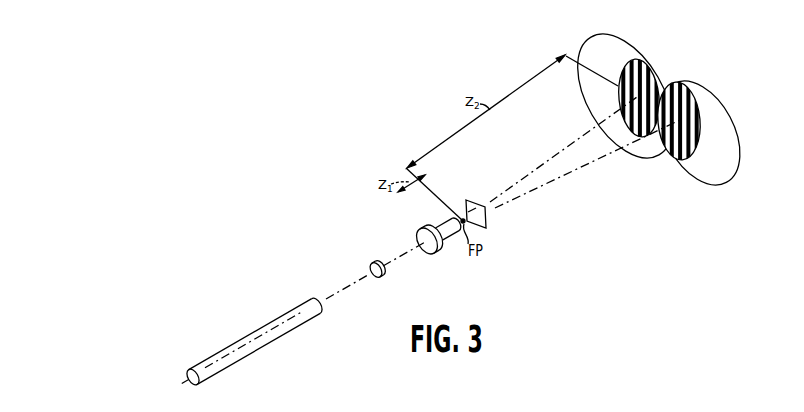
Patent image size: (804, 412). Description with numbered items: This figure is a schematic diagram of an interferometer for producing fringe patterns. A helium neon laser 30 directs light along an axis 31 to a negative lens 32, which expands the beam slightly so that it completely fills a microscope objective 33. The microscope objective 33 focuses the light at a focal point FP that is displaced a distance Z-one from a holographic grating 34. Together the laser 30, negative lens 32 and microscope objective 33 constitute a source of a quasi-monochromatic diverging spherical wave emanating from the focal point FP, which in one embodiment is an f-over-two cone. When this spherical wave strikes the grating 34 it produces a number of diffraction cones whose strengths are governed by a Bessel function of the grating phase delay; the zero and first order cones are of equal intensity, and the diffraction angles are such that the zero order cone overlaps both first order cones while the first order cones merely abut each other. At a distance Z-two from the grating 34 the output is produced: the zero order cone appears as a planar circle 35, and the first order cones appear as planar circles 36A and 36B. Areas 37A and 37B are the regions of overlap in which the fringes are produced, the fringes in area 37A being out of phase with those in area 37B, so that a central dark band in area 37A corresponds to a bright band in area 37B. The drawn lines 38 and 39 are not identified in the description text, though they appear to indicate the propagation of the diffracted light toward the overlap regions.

The helium neon laser 30 is at (260, 325).
The axis 31 is at (340, 288).
The negative lens 32 is at (386, 276).
The microscope objective 33 is at (416, 235).
The holographic grating 34 is at (487, 216).
The planar circle 35 is at (657, 108).
The planar circle 36A is at (617, 50).
The planar circle 36B is at (715, 108).
The area of overlap 37A is at (632, 134).
The area of overlap 37B is at (670, 153).
The first beam path 38 is at (540, 167).
The second beam path 39 is at (553, 182).